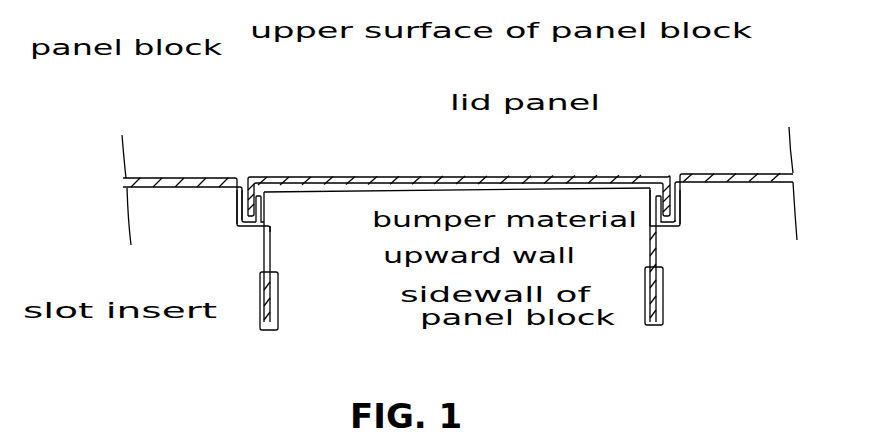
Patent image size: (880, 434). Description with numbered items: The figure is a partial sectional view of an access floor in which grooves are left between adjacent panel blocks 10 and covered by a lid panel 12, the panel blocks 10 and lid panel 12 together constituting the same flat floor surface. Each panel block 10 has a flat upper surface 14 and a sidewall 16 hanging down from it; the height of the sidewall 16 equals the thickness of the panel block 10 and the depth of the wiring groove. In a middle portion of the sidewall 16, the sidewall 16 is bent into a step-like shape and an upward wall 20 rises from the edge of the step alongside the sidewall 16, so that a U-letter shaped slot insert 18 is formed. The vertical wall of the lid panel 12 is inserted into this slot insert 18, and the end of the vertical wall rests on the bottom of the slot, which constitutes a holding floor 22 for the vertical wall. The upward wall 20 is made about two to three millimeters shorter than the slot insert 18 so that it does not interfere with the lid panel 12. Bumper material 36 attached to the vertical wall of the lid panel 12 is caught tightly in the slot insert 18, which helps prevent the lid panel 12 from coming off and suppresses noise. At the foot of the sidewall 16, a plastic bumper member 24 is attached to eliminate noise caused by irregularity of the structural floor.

The panel block 10 is at (164, 170).
The lid panel 12 is at (392, 177).
The upper surface 14 is at (205, 177).
The sidewall 16 is at (272, 253).
The slot insert 18 is at (238, 213).
The upward wall 20 is at (268, 212).
The holding floor 22 is at (258, 235).
The bumper member 24 is at (278, 317).
The bumper material 36 is at (270, 203).